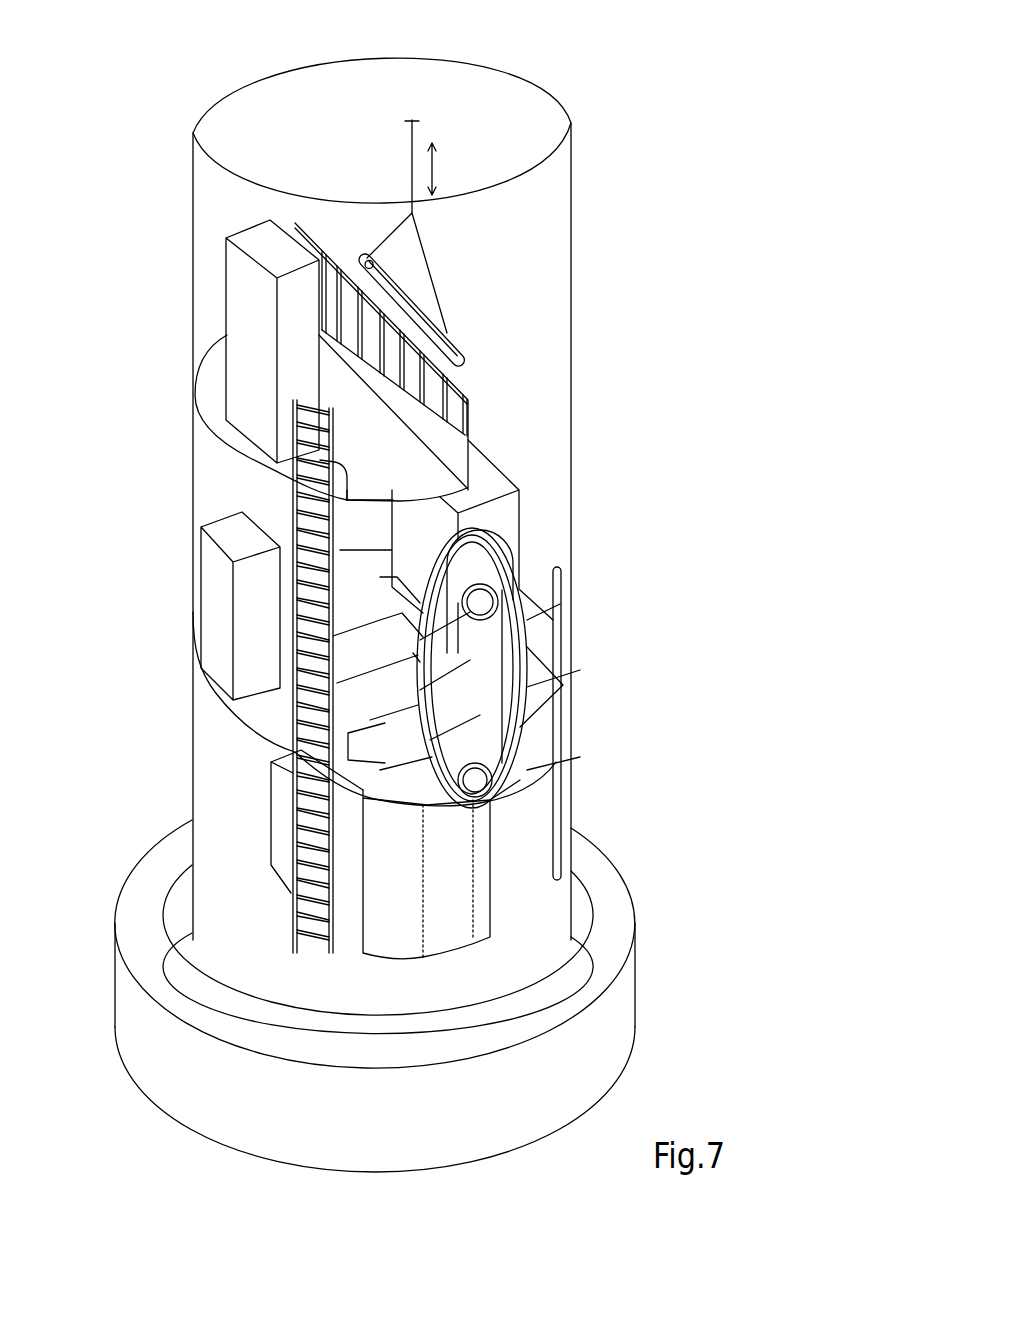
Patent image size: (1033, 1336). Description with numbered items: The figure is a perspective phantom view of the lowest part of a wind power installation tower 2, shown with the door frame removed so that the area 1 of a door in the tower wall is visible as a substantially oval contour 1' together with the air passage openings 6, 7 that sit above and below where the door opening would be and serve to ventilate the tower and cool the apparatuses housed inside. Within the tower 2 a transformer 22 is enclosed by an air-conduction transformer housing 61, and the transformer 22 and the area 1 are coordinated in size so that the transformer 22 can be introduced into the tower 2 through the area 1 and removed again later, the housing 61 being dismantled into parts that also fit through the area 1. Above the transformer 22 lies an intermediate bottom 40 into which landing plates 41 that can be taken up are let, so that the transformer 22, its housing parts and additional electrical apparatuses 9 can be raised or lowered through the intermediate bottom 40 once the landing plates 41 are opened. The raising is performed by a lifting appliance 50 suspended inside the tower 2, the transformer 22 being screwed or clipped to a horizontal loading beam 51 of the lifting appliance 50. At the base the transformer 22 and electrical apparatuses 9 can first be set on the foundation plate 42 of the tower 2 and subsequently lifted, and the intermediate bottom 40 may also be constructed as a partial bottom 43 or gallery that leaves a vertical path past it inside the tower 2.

The area of a door 1 is at (556, 676).
The oval contour 1' is at (599, 723).
The tower 2 is at (574, 477).
The air passage opening 6 is at (505, 790).
The air passage opening 7 is at (515, 585).
The electrical apparatuses 9 is at (243, 317).
The transformer 22 is at (347, 833).
The intermediate bottom 40 is at (525, 622).
The landing plates 41 is at (505, 655).
The foundation plate 42 is at (613, 928).
The partial bottom 43 is at (210, 440).
The lifting appliance 50 is at (455, 286).
The horizontal loading beam 51 is at (463, 353).
The transformer housing 61 is at (483, 868).